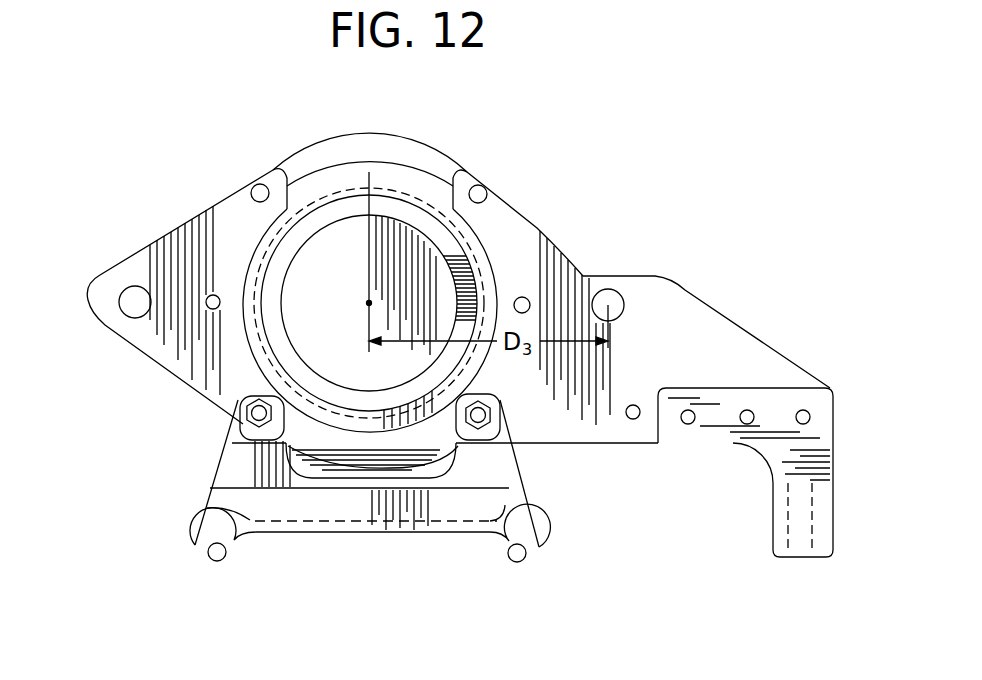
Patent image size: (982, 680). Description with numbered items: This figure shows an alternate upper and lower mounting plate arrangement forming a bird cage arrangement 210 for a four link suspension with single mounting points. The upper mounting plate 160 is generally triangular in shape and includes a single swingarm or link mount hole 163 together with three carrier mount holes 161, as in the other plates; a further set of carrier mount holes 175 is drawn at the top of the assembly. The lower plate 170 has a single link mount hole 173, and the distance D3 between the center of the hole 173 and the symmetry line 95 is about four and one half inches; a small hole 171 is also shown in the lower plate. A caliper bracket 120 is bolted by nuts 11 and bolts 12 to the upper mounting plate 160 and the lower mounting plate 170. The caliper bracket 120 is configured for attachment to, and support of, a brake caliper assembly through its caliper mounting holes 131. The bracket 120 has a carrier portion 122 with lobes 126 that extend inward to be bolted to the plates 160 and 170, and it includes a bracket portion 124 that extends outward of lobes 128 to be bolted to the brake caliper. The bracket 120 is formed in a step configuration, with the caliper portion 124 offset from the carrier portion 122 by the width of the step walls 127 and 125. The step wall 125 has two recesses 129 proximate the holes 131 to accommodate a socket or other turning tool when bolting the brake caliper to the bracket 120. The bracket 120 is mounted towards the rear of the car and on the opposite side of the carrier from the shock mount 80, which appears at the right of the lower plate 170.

The mounting assembly 210 is at (352, 112).
The upper mounting plate 160 is at (192, 217).
The carrier mount holes 161 is at (255, 184).
The link mount hole 163 is at (135, 320).
The symmetry line 95 is at (368, 252).
The bolt holes 175 is at (484, 176).
The link mount hole 173 is at (623, 293).
The lower mounting plate 170 is at (732, 348).
The hole 171 is at (634, 405).
The shock mount 80 is at (776, 484).
The nuts 11 is at (235, 400).
The bolts 12 is at (231, 440).
The carrier portion 122 is at (287, 409).
The lobes 126 is at (252, 447).
The step wall 127 is at (488, 489).
The caliper bracket 120 is at (523, 500).
The lobes 128 is at (198, 528).
The caliper mounting holes 131 is at (207, 557).
The recesses 129 is at (222, 508).
The bracket portion 124 is at (367, 507).
The step wall 125 is at (442, 537).